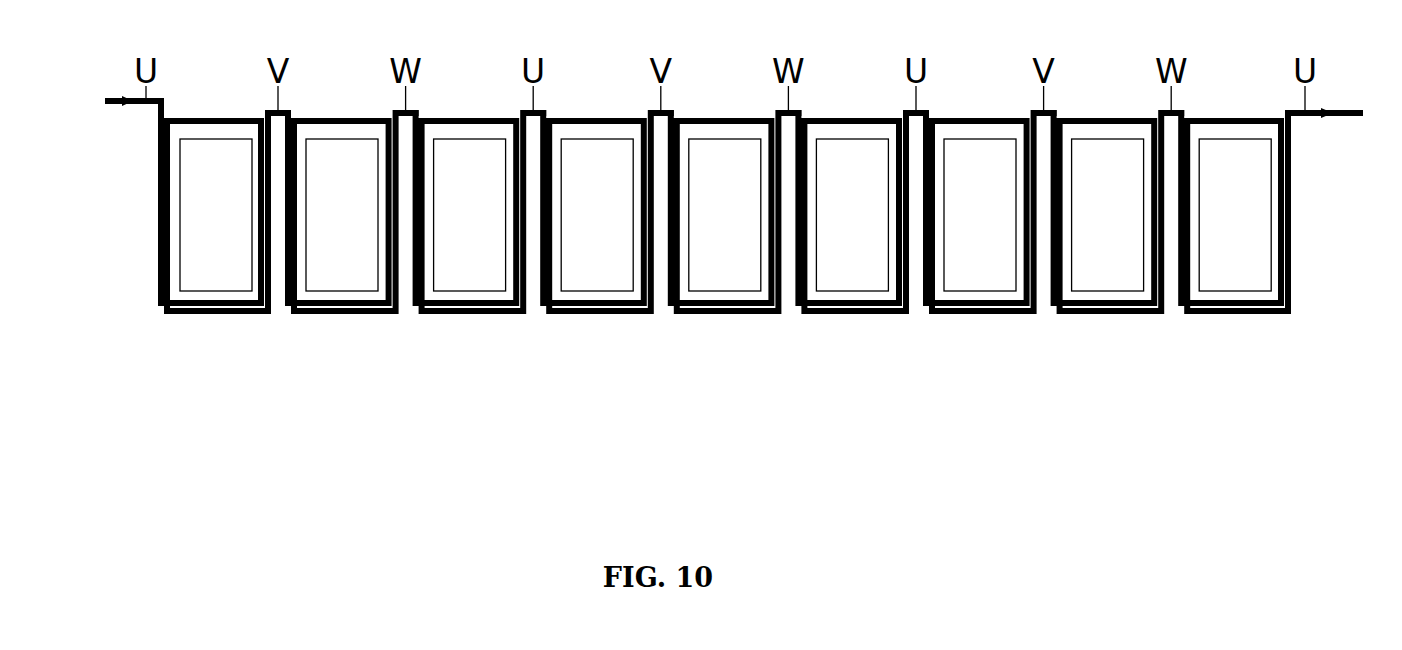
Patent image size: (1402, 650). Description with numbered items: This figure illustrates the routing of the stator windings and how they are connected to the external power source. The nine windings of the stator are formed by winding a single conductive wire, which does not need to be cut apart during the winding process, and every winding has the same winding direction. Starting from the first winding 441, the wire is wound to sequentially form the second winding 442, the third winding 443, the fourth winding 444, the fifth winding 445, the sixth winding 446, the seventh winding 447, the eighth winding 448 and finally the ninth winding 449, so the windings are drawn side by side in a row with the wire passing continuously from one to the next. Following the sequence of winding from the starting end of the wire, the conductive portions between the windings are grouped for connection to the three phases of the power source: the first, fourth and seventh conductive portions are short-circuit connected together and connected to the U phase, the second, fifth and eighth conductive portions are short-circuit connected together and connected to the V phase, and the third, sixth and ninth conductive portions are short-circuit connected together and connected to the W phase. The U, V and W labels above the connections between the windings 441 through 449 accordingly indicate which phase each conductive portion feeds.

The first winding 441 is at (215, 303).
The second winding 442 is at (341, 303).
The third winding 443 is at (469, 303).
The fourth winding 444 is at (596, 303).
The fifth winding 445 is at (724, 303).
The sixth winding 446 is at (851, 303).
The seventh winding 447 is at (979, 303).
The eighth winding 448 is at (1107, 303).
The ninth winding 449 is at (1234, 303).